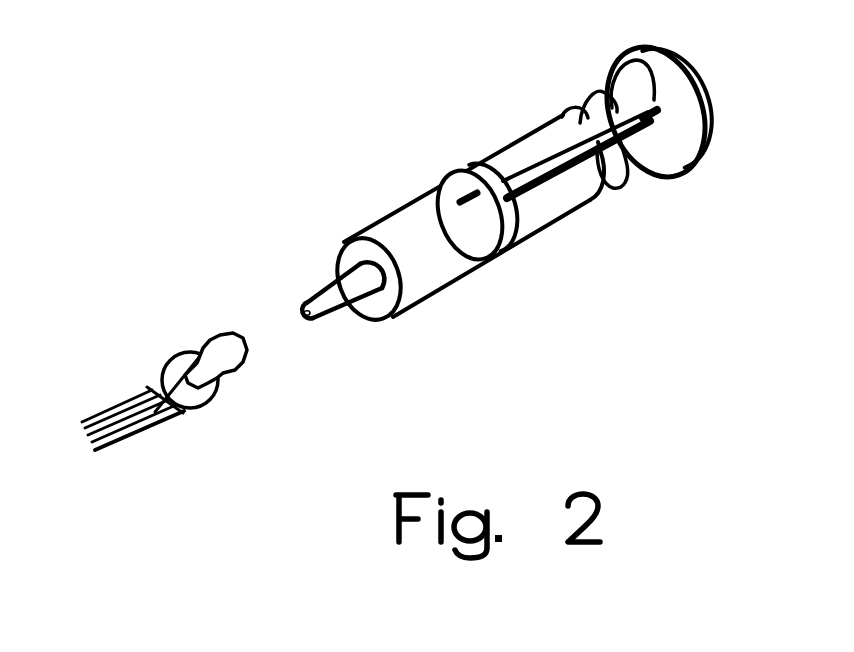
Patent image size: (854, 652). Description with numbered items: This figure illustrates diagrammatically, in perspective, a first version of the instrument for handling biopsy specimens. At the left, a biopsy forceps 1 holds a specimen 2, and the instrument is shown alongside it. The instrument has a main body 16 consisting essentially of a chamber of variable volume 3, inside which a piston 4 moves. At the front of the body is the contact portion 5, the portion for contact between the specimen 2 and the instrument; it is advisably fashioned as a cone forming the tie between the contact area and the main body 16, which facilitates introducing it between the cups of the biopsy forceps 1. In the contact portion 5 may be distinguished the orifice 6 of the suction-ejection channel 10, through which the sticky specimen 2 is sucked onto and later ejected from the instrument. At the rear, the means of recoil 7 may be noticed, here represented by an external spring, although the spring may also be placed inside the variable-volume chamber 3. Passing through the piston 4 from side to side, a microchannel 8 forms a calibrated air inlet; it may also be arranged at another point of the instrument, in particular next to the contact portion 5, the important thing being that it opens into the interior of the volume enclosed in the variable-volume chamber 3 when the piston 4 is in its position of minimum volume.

The biopsy forceps 1 is at (130, 395).
The specimen 2 is at (225, 352).
The chamber of variable volume 3 is at (465, 237).
The piston 4 is at (477, 212).
The contact portion 5 is at (356, 302).
The orifice 6 is at (308, 323).
The means of recoil 7 is at (572, 107).
The microchannel 8 is at (470, 188).
The suction-ejection channel 10 is at (340, 306).
The main body 16 is at (388, 217).